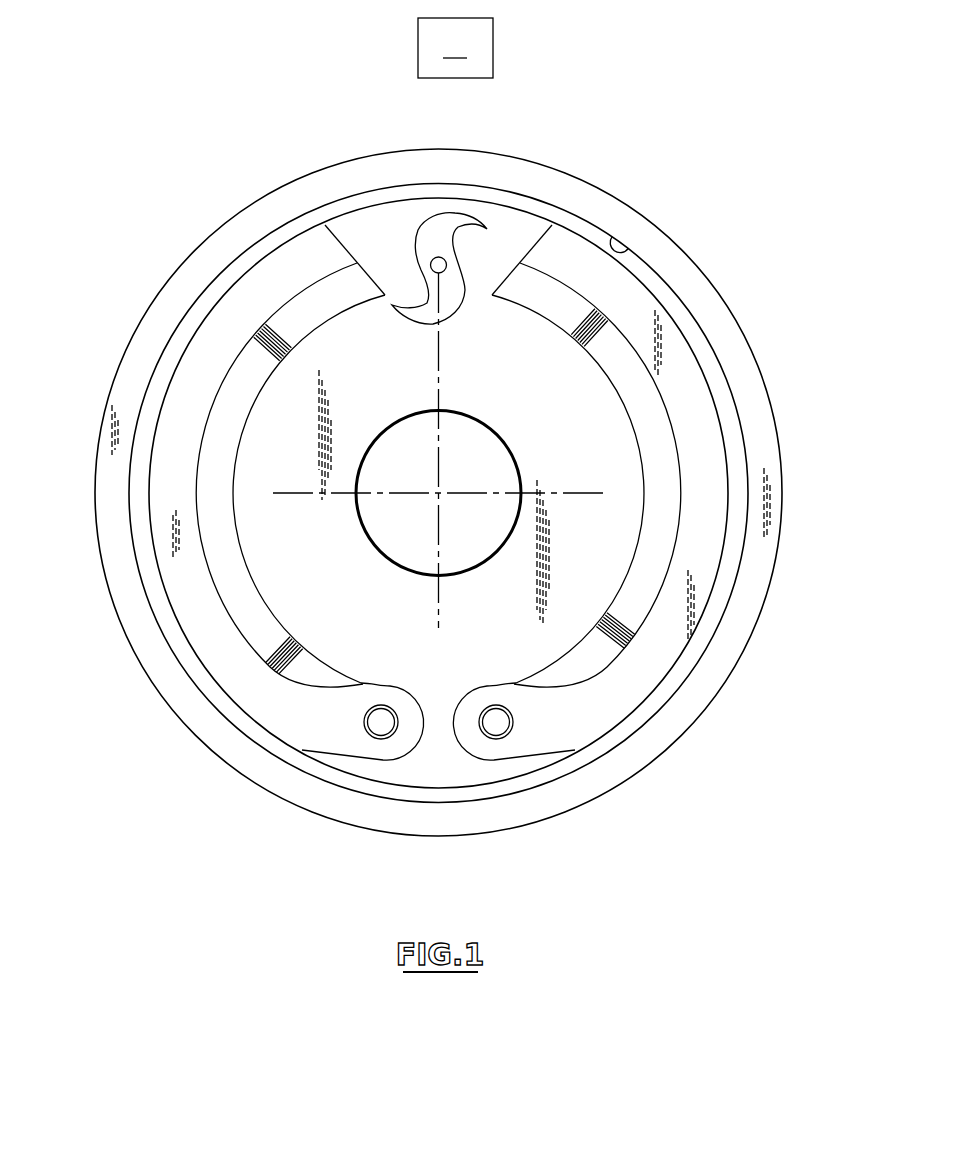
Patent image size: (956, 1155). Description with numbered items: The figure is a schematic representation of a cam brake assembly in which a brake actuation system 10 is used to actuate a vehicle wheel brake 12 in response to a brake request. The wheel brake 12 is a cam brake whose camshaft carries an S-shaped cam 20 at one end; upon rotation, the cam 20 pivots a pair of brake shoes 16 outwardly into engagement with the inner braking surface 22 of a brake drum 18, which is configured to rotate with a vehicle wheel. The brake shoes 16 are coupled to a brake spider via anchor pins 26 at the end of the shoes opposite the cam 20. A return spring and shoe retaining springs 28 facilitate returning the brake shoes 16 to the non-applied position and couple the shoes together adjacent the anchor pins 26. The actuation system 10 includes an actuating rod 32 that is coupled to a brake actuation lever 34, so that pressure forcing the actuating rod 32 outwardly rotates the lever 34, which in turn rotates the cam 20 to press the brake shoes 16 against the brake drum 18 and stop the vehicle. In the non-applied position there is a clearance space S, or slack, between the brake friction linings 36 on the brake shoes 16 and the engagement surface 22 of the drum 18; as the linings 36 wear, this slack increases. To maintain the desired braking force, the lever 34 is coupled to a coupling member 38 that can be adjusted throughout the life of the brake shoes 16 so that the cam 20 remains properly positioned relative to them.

The brake actuation system 10 is at (455, 213).
The vehicle wheel brake 12 is at (158, 188).
The brake shoes 16 is at (438, 504).
The brake drum 18 is at (703, 297).
The S-shaped cam 20 is at (437, 228).
The inner braking surface 22 is at (623, 252).
The anchor pins 26 is at (490, 728).
The return spring and shoe retaining springs 28 is at (582, 340).
The actuating rod 32 is at (728, 513).
The brake actuation lever 34 is at (478, 690).
The brake friction linings 36 is at (693, 407).
The coupling member 38 is at (360, 728).
The clearance space S is at (723, 595).